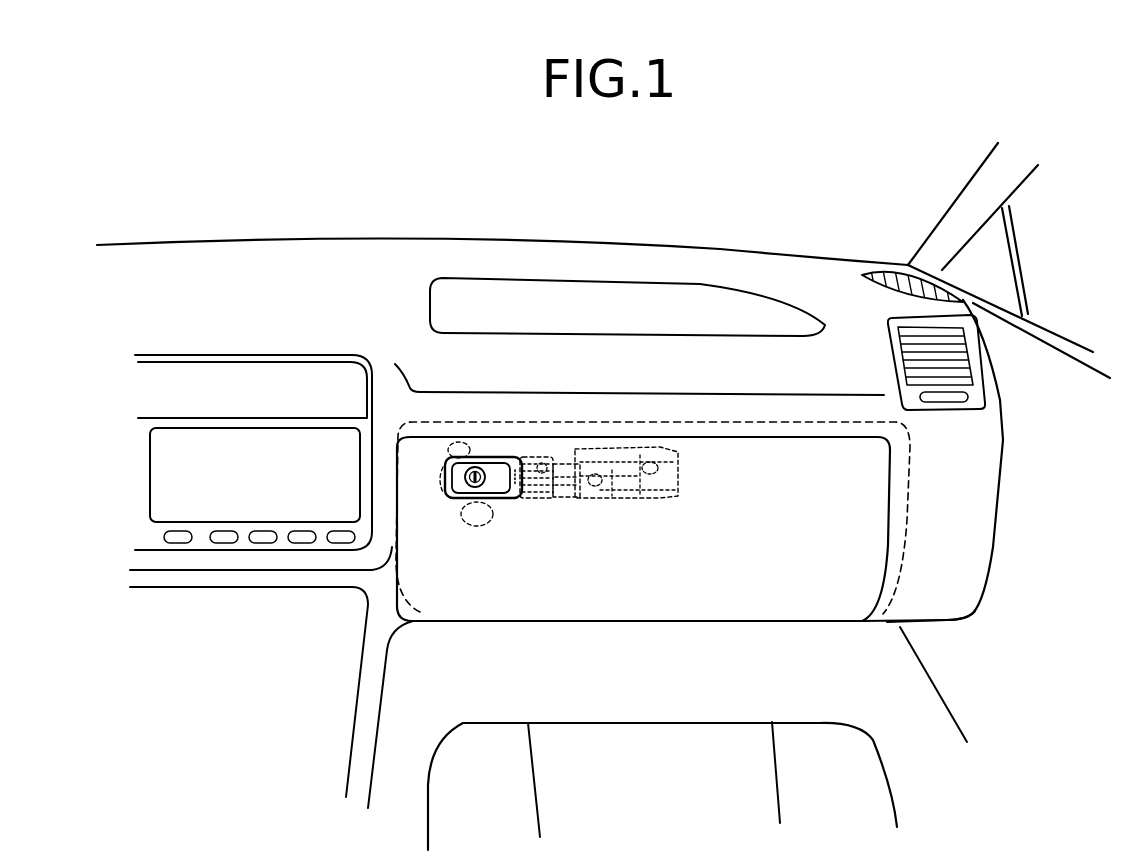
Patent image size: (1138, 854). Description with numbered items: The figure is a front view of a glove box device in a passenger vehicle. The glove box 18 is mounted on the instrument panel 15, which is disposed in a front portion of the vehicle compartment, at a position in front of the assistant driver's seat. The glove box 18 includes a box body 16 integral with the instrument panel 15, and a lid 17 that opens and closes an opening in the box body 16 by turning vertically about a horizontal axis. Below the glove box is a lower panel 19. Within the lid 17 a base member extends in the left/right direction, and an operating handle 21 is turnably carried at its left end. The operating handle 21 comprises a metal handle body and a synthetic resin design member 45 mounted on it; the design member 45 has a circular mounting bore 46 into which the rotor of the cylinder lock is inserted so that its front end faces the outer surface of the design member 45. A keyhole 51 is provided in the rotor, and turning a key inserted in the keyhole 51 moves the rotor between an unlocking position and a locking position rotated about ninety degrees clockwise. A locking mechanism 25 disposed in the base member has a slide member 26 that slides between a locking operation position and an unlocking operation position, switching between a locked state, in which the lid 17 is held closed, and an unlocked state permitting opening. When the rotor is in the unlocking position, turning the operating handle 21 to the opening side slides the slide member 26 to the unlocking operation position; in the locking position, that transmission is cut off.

The instrument panel 15 is at (433, 252).
The box body 16 is at (750, 421).
The lid 17 is at (658, 570).
The glove box 18 is at (829, 624).
The lower panel 19 is at (653, 780).
The operating handle 21 is at (511, 466).
The locking mechanism 25 is at (631, 438).
The slide member 26 is at (577, 494).
The design member 45 is at (500, 477).
The mounting bore 46 is at (544, 458).
The keyhole 51 is at (472, 487).